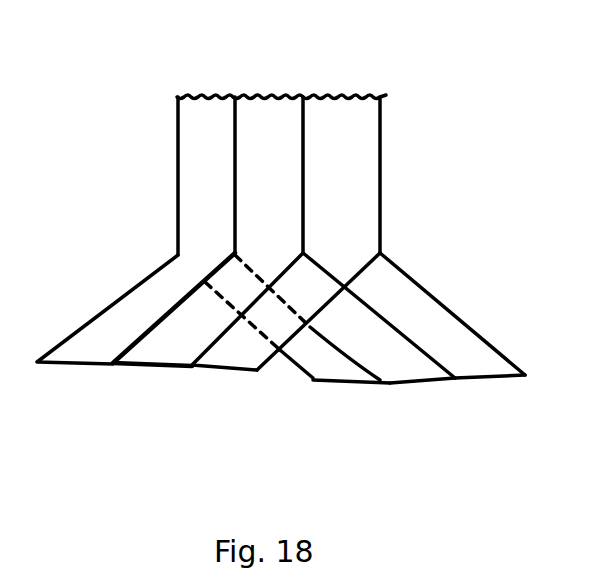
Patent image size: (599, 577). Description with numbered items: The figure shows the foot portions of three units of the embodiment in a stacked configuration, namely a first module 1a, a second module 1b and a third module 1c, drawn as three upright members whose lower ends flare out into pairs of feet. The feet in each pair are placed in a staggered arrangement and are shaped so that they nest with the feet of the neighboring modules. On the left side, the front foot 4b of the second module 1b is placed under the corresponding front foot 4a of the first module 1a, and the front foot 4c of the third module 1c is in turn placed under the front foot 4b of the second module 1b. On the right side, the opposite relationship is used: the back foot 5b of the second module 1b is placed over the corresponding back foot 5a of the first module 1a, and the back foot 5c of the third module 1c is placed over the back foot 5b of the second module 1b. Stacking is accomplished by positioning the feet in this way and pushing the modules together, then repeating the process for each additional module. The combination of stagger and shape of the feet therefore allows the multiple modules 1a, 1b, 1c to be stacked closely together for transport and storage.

The first module 1a is at (200, 76).
The second module 1b is at (272, 78).
The third module 1c is at (359, 76).
The front foot of first module 4a is at (82, 363).
The front foot of second module 4b is at (157, 365).
The front foot of third module 4c is at (222, 371).
The back foot of first module 5a is at (357, 385).
The back foot of second module 5b is at (430, 382).
The back foot of third module 5c is at (487, 377).